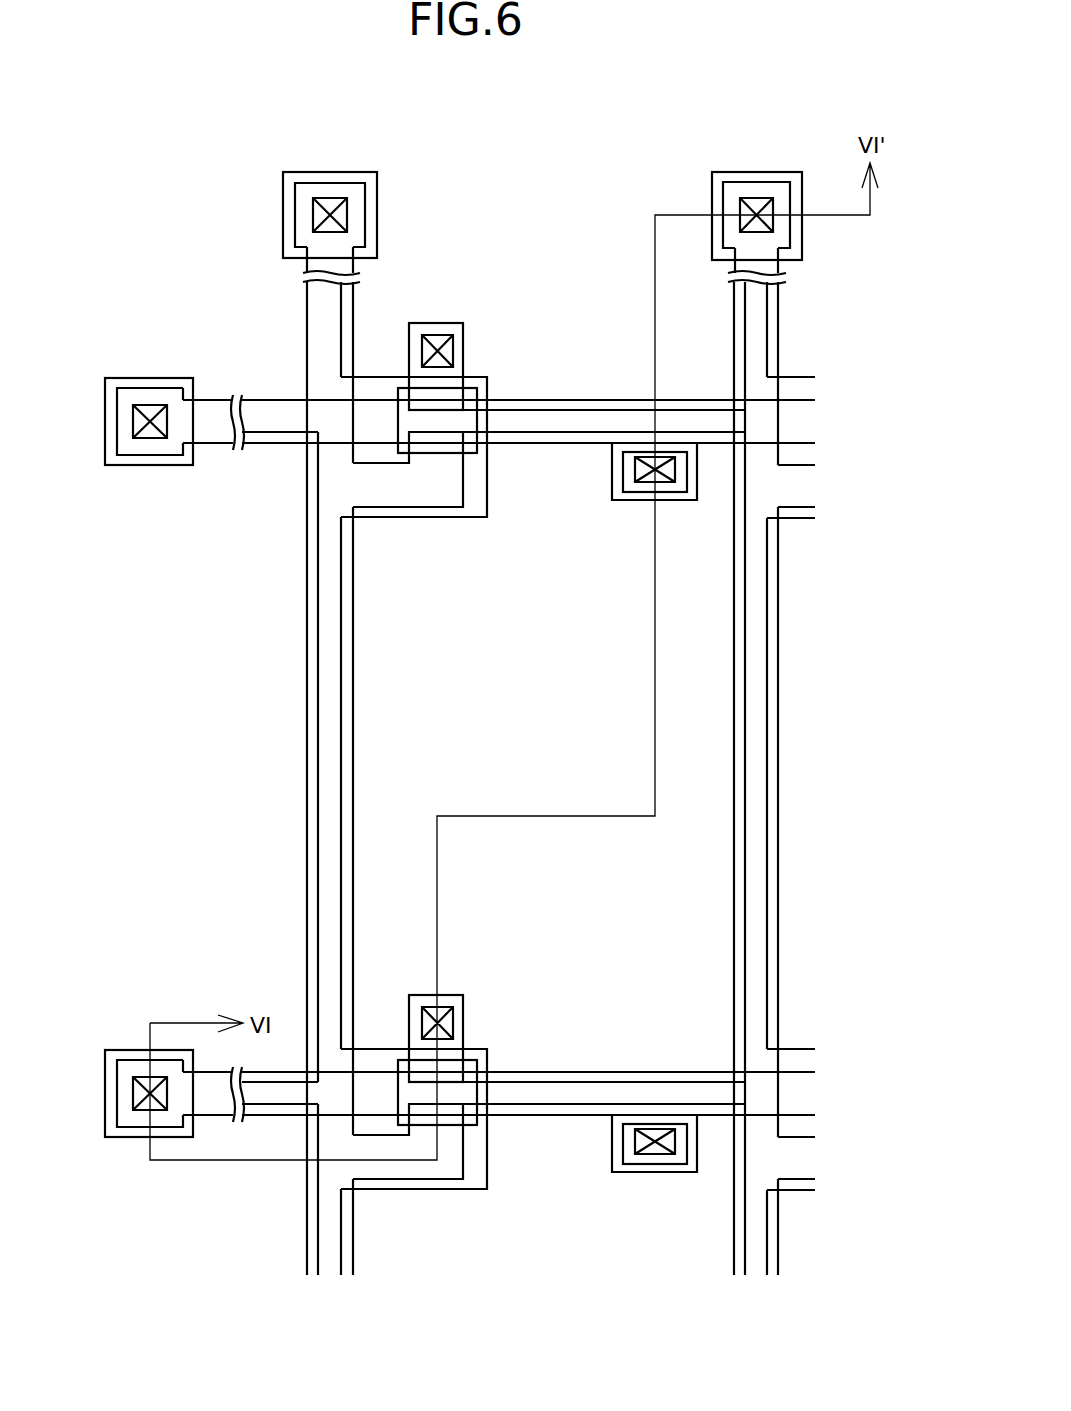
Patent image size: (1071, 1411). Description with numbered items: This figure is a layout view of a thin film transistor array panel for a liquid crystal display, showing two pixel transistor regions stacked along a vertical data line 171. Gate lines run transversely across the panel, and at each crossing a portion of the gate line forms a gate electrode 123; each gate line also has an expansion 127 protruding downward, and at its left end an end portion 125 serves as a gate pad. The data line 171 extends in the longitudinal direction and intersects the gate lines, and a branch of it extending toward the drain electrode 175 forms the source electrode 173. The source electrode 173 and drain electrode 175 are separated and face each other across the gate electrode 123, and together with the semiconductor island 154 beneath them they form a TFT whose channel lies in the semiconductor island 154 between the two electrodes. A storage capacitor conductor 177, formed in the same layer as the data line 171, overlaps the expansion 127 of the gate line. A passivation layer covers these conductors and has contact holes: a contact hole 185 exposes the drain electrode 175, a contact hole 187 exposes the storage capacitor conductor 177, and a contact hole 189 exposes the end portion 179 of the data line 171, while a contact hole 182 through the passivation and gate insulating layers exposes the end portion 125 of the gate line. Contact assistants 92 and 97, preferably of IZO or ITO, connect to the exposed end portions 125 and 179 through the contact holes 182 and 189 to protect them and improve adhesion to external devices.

The contact assistant 92 is at (168, 1140).
The contact assistant 97 is at (803, 233).
The gate electrode 123 is at (512, 1135).
The end portion of the gate line 125 is at (118, 1167).
The expansion 127 is at (630, 500).
The semiconductor island 154 is at (385, 1097).
The data line 171 is at (307, 632).
The source electrode 173 is at (415, 508).
The drain electrode 175 is at (492, 1025).
The storage capacitor conductor 177 is at (675, 492).
The end portion of the data line 179 is at (773, 182).
The contact hole 182 is at (140, 1073).
The contact hole 185 is at (477, 967).
The contact hole 187 is at (647, 457).
The contact hole 189 is at (757, 200).